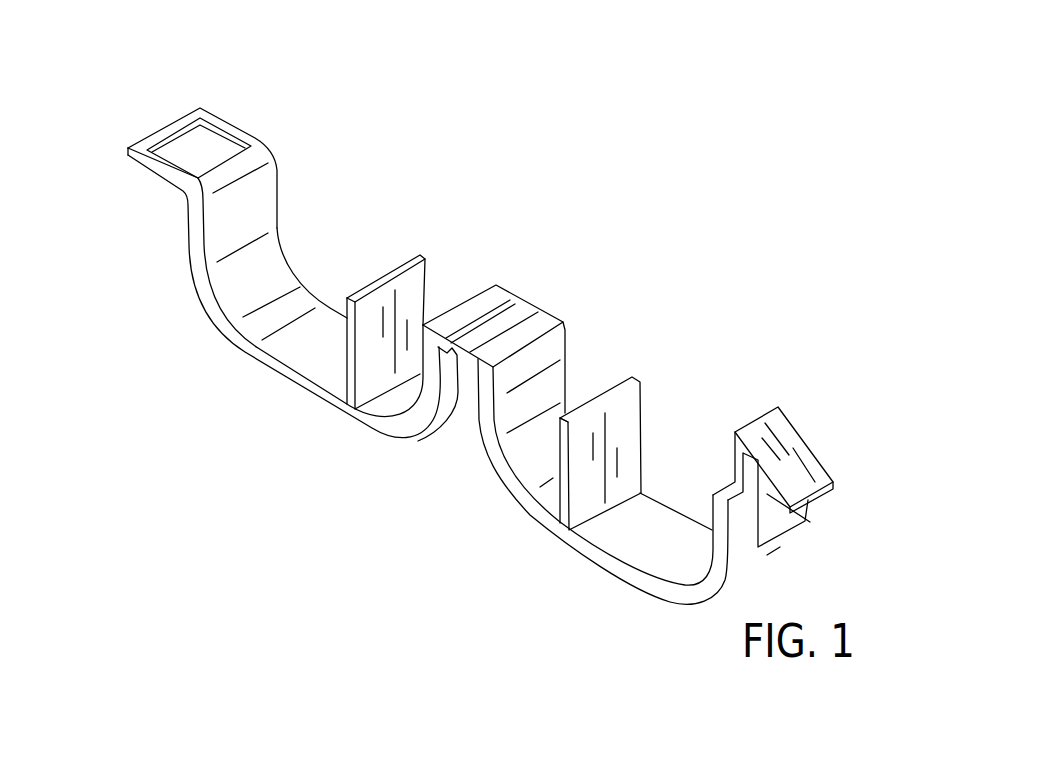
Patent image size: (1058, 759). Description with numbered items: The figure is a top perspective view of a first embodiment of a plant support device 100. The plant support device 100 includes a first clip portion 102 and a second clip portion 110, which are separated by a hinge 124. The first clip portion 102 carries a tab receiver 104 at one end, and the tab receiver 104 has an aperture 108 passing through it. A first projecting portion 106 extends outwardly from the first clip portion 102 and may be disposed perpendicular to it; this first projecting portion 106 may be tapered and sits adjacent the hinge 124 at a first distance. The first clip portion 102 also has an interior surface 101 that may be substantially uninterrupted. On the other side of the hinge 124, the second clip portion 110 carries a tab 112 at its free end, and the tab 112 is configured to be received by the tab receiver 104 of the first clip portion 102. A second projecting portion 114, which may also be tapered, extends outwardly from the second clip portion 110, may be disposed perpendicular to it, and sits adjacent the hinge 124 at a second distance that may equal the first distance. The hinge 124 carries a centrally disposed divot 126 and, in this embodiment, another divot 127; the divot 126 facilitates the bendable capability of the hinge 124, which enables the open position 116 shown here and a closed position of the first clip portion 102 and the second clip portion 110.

The plant support device 100 is at (111, 45).
The interior surface 101 is at (305, 356).
The first clip portion 102 is at (220, 315).
The tab receiver 104 is at (200, 107).
The first projecting portion 106 is at (420, 252).
The aperture 108 is at (232, 143).
The second clip portion 110 is at (678, 598).
The tab 112 is at (807, 470).
The second projecting portion 114 is at (634, 375).
The open position 116 is at (343, 208).
The hinge 124 is at (497, 291).
The divot 126 is at (481, 393).
The another divot 127 is at (527, 308).